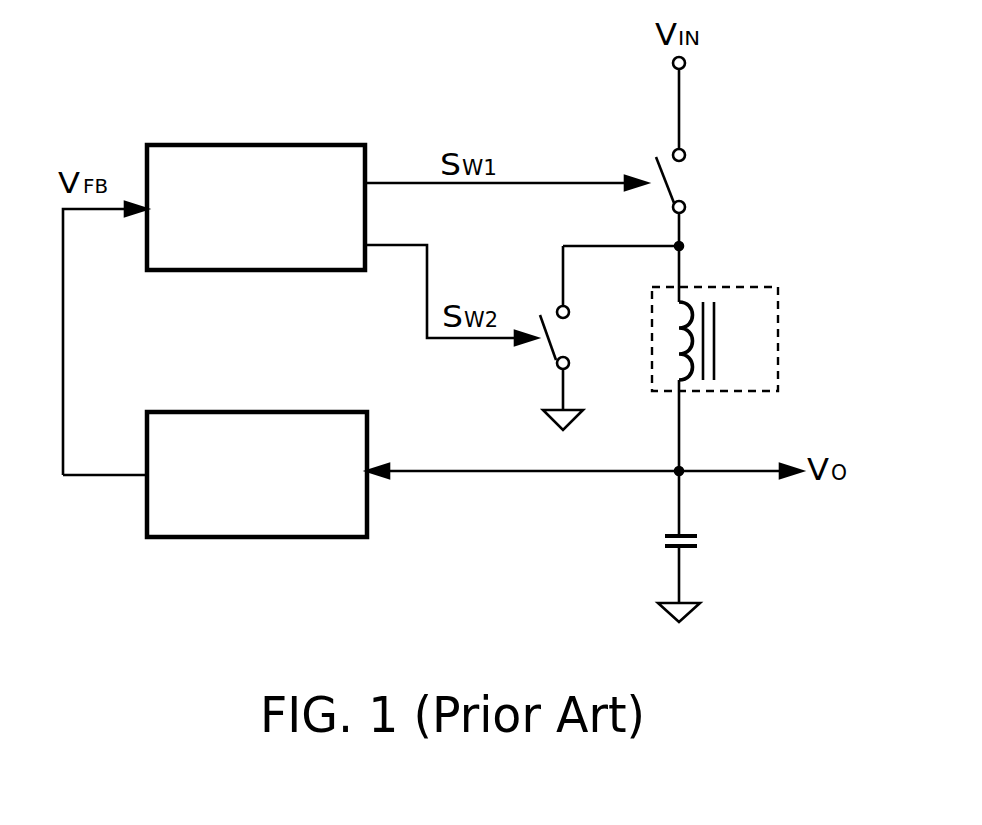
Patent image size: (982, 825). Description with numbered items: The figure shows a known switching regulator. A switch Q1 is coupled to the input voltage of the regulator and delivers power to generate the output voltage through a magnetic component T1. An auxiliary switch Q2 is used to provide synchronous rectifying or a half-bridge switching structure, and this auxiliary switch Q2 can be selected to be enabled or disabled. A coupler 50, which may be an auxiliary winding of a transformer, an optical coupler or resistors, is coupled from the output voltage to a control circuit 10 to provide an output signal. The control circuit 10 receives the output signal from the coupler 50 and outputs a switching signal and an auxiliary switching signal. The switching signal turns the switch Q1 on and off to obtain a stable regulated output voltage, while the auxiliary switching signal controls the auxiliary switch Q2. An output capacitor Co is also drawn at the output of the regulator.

The control circuit 10 is at (255, 143).
The coupler 50 is at (255, 410).
The switch Q1 is at (693, 135).
The auxiliary switch Q2 is at (578, 368).
The magnetic component T1 is at (715, 319).
The output capacitor Co is at (703, 538).